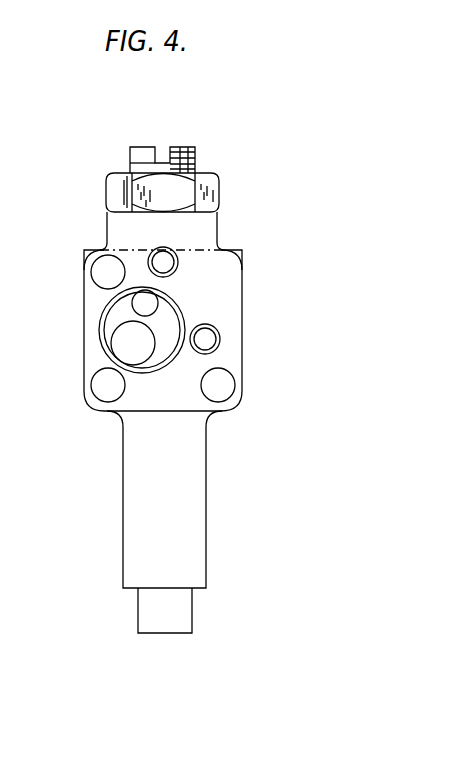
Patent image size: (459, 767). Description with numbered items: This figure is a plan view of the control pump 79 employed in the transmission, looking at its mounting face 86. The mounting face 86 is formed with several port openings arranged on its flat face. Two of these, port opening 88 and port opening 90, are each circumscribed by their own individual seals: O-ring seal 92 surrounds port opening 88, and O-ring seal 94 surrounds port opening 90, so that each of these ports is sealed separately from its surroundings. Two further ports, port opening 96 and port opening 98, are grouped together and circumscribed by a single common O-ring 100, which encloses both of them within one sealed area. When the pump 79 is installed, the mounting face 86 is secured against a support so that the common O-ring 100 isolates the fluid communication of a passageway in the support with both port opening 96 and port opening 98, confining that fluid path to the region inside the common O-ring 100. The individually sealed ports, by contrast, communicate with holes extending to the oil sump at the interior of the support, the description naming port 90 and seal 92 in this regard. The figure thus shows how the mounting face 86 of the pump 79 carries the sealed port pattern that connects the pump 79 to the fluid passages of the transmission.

The pump 79 is at (163, 390).
The mounting face 86 is at (227, 313).
The port opening 88 is at (205, 339).
The port opening 90 is at (166, 262).
The O-ring seal 92 is at (215, 351).
The O-ring seal 94 is at (158, 247).
The port opening 96 is at (143, 303).
The port opening 98 is at (130, 347).
The common O-ring 100 is at (177, 302).